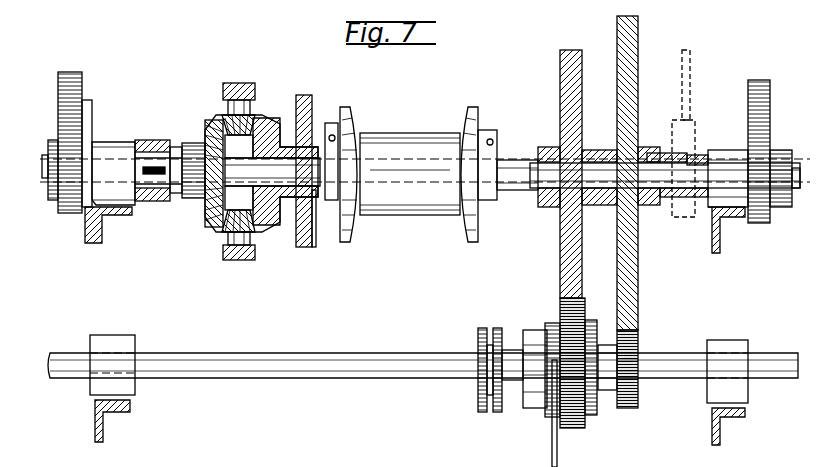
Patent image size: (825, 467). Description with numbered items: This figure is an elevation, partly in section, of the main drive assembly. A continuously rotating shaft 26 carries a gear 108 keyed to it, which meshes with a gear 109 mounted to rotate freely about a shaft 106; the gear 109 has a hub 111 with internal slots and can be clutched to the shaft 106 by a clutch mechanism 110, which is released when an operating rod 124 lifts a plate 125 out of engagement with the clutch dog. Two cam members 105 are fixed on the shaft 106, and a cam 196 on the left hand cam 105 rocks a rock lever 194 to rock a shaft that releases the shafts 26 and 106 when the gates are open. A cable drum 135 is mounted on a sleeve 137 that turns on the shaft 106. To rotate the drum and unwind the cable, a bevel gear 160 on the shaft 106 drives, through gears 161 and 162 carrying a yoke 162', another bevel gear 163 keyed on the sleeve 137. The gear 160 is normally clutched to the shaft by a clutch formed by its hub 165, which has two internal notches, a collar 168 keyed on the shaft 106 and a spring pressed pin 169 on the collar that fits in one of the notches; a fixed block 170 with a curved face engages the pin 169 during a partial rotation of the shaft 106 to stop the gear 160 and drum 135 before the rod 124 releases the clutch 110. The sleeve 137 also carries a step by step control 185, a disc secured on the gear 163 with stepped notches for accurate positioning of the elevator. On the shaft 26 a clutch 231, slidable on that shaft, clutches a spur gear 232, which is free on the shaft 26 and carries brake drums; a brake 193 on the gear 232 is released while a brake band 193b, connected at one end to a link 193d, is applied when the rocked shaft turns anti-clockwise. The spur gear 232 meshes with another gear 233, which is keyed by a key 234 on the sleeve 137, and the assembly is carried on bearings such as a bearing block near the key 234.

The continuously rotating shaft 26 is at (248, 352).
The cam member 105 is at (84, 86).
The shaft 106 is at (600, 170).
The gear 108 is at (638, 342).
The gear 109 is at (638, 298).
The clutch mechanism 110 is at (697, 155).
The hub 111 is at (652, 152).
The operating rod 124 is at (690, 60).
The plate 125 is at (695, 114).
The cable drum 135 is at (465, 110).
The sleeve 137 is at (312, 150).
The bevel gear 160 is at (208, 125).
The gear 161 is at (255, 115).
The gear 162 is at (254, 235).
The yoke 162' is at (226, 167).
The bevel gear 163 is at (265, 130).
The hub 165 is at (192, 197).
The collar 168 is at (140, 165).
The spring pressed pin 169 is at (163, 177).
The fixed block 170 is at (155, 140).
The step by step control 185 is at (314, 235).
The rock lever 194 is at (88, 236).
The cam 196 is at (88, 122).
The clutch 231 is at (495, 330).
The spur gear 232 is at (575, 430).
The gear 233 is at (575, 228).
The key 234 is at (552, 150).
The brake 193 is at (595, 416).
The brake band 193b is at (548, 323).
The link 193d is at (552, 448).